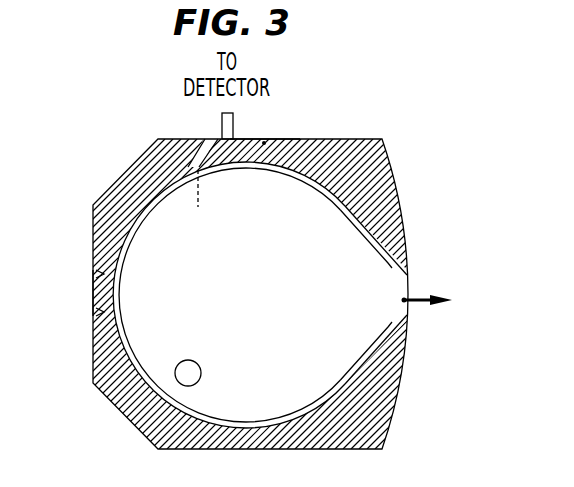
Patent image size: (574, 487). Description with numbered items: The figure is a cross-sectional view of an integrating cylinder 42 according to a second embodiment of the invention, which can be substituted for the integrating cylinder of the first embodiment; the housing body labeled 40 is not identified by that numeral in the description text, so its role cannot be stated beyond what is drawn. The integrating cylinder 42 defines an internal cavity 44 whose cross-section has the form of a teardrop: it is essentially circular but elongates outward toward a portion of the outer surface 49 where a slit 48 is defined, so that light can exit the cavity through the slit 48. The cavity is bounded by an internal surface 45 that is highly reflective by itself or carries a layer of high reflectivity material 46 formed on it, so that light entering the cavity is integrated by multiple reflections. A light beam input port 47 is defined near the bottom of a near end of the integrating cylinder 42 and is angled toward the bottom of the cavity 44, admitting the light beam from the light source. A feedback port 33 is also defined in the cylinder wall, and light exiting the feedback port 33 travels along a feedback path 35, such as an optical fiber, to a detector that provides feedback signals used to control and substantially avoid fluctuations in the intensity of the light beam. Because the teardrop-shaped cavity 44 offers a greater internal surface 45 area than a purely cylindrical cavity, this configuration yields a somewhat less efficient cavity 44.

The feedback port 33 is at (201, 188).
The feedback path 35 is at (218, 138).
The housing 40 is at (401, 206).
The integrating cylinder 42 is at (265, 142).
The internal cavity 44 is at (316, 378).
The internal surface 45 is at (336, 204).
The layer of high reflectivity material 46 is at (141, 218).
The light beam input port 47 is at (201, 362).
The slit 48 is at (406, 285).
The outer surface 49 is at (93, 296).